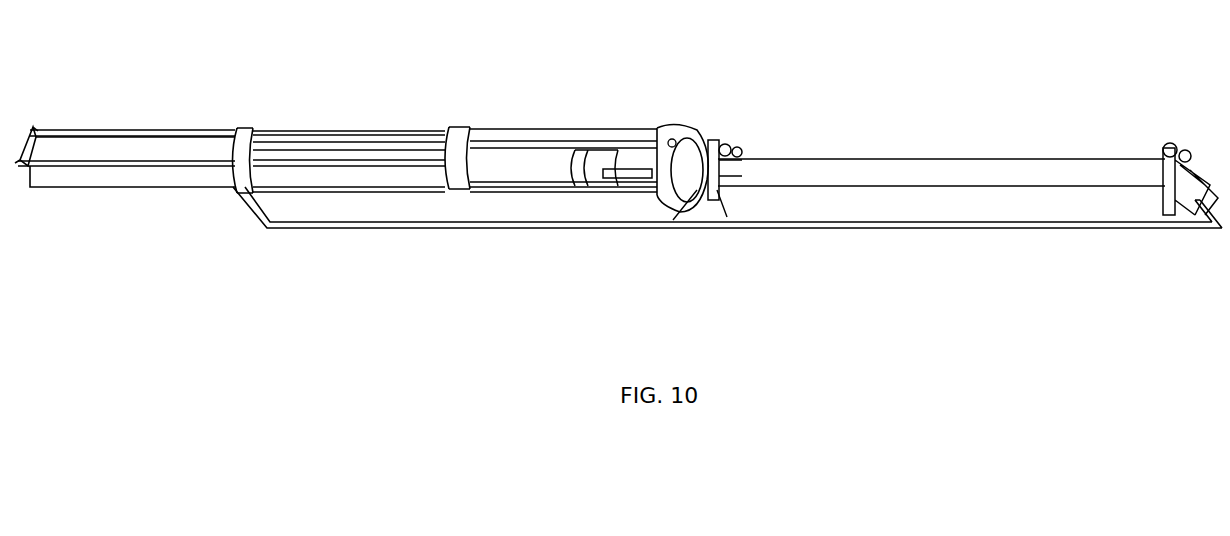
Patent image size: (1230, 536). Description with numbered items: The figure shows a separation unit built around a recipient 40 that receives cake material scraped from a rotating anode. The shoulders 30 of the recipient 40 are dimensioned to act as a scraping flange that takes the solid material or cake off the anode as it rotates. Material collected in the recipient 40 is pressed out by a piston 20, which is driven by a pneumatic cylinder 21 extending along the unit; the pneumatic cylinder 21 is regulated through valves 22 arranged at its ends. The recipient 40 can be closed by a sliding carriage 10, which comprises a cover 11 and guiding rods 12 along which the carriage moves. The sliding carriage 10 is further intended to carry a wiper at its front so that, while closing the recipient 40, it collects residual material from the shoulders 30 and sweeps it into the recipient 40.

The sliding carriage 10 is at (174, 116).
The cover 11 is at (93, 142).
The guiding rods 12 is at (132, 163).
The piston 20 is at (580, 172).
The pneumatic cylinder 21 is at (857, 168).
The valves 22 is at (728, 148).
The shoulders 30 is at (258, 220).
The recipient 40 is at (506, 167).